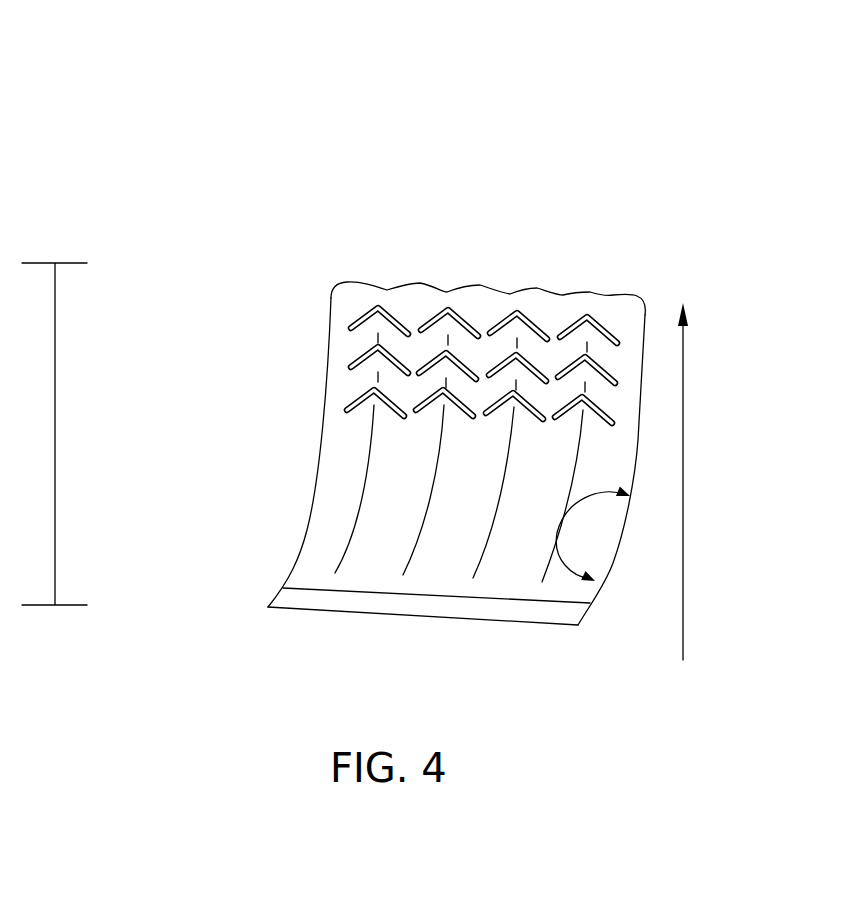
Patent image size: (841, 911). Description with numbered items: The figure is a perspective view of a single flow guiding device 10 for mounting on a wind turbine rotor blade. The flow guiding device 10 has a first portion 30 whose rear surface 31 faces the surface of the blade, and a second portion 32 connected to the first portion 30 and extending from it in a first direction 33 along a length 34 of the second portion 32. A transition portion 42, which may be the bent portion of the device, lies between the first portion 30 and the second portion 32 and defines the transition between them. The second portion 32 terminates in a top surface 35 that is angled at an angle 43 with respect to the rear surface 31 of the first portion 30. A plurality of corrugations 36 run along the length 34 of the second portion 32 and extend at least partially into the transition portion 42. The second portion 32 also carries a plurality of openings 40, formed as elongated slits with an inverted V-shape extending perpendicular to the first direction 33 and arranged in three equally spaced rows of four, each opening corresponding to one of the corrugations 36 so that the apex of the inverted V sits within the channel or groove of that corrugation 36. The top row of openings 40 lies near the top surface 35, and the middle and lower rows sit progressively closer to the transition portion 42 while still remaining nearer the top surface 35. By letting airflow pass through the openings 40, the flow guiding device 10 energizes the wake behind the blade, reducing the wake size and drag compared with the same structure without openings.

The flow guiding device 10 is at (158, 99).
The first portion 30 is at (322, 573).
The rear surface 31 is at (294, 632).
The second portion 32 is at (408, 383).
The first direction 33 is at (685, 475).
The length 34 is at (55, 420).
The top surface 35 is at (357, 282).
The corrugations 36 is at (523, 427).
The openings 40 is at (398, 318).
The transition portion 42 is at (380, 508).
The angle 43 is at (560, 528).